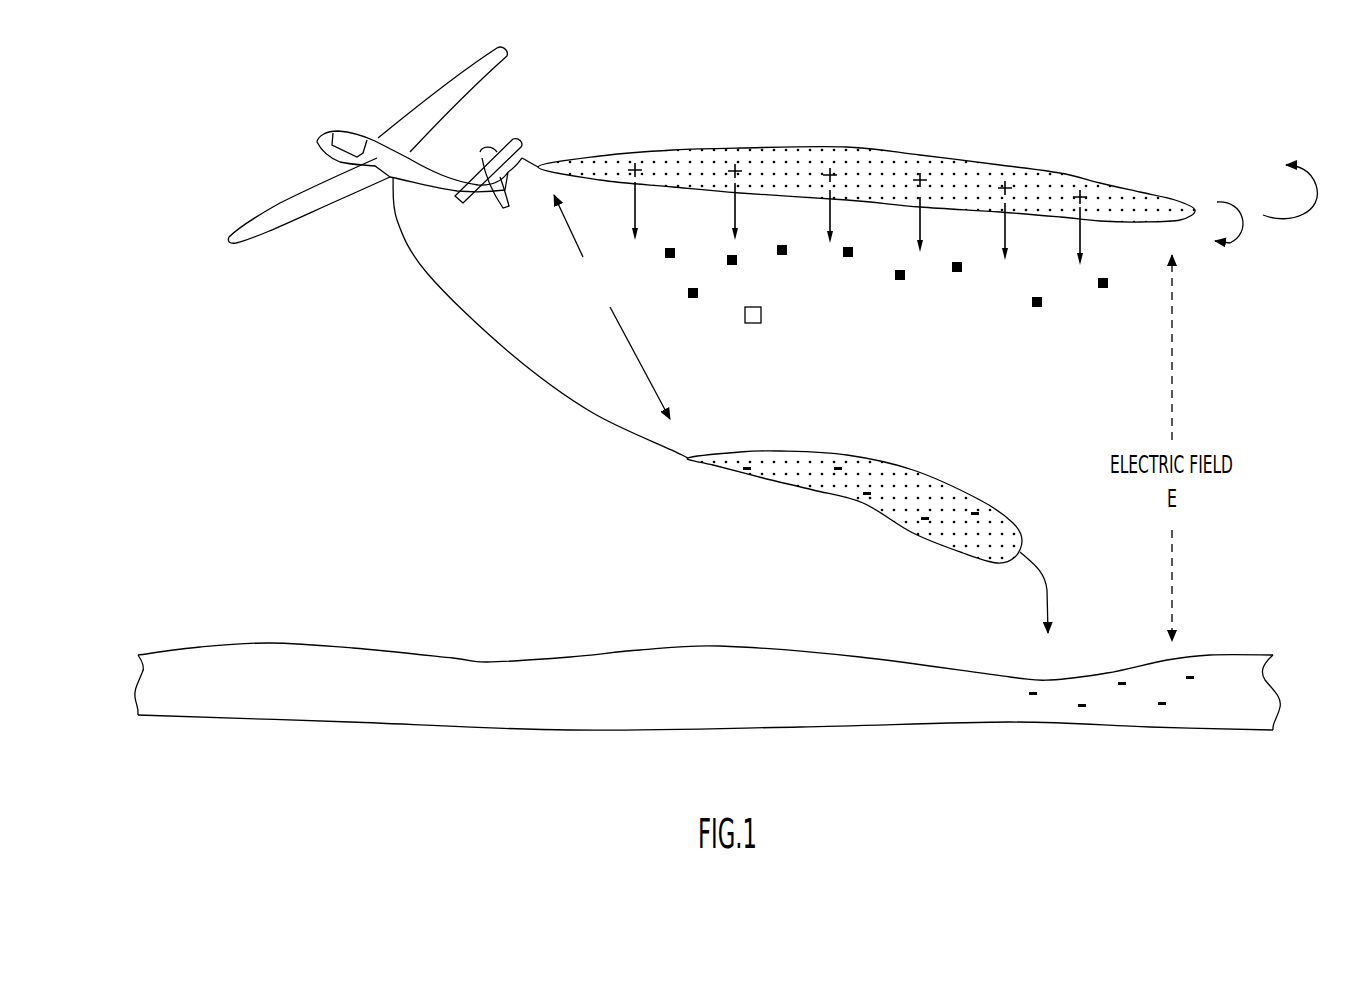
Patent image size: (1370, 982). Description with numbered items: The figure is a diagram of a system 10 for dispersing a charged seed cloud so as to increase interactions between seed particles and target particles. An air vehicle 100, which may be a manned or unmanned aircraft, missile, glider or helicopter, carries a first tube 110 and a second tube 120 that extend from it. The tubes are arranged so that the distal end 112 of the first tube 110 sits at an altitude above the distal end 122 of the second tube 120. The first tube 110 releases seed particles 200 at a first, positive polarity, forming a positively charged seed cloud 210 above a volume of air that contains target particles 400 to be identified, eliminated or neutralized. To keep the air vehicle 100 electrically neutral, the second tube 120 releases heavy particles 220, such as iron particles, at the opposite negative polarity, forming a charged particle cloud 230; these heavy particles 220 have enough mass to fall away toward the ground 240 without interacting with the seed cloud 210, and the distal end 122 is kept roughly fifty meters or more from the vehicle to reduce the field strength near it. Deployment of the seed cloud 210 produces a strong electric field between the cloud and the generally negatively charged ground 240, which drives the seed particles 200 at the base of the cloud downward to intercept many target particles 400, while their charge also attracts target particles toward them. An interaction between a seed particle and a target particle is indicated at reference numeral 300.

The system 10 is at (394, 489).
The air vehicle 100 is at (350, 131).
The first tube 110 is at (522, 158).
The distal end of the first tube 112 is at (543, 160).
The second tube 120 is at (502, 358).
The distal end of the second tube 122 is at (685, 468).
The seed particles 200 is at (779, 155).
The charged seed cloud 210 is at (847, 147).
The heavy particles 220 is at (900, 483).
The charged particle cloud 230 is at (807, 453).
The ground 240 is at (1210, 653).
The interaction between a seed particle and a target particle 300 is at (761, 313).
The target particles 400 is at (688, 292).